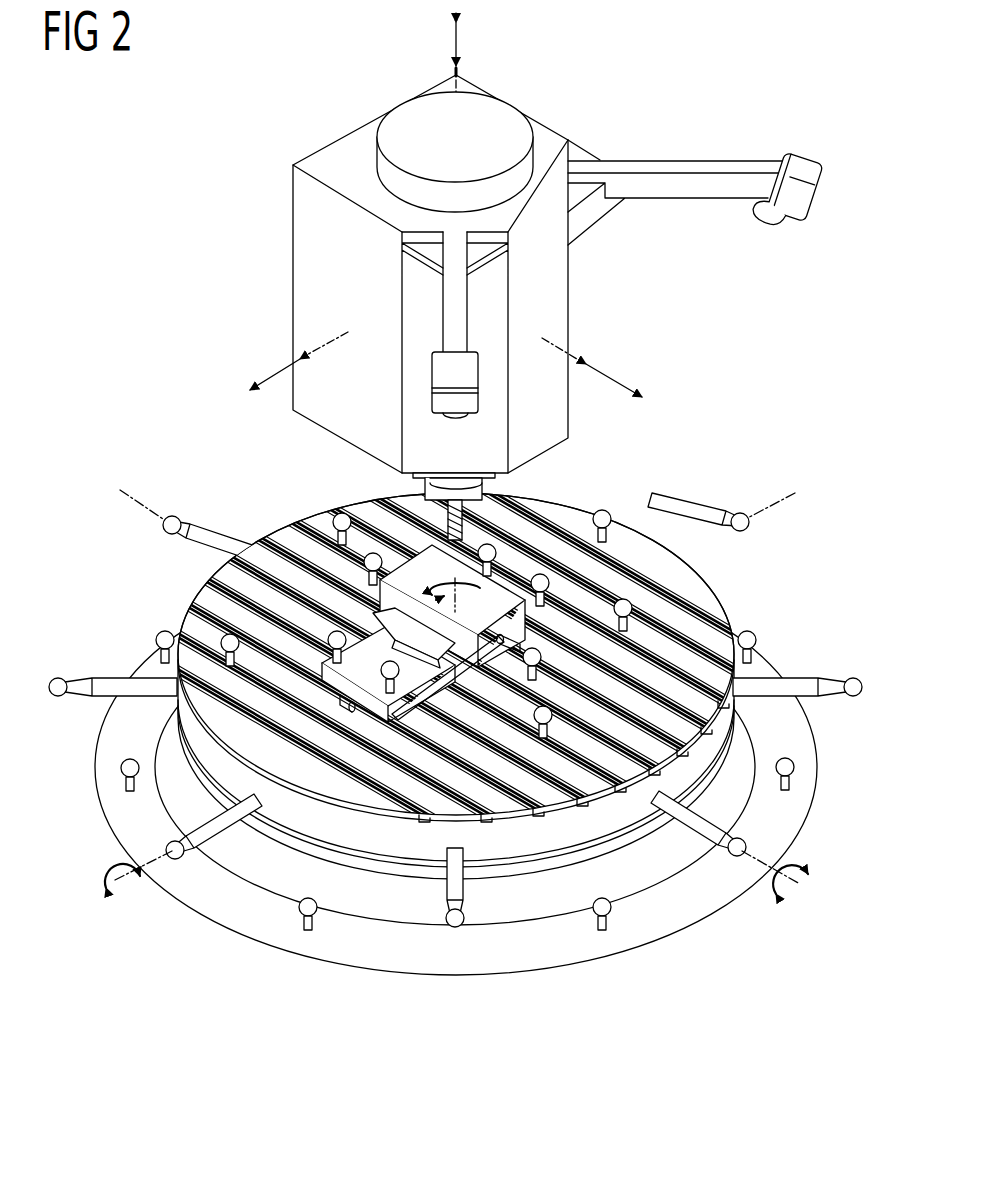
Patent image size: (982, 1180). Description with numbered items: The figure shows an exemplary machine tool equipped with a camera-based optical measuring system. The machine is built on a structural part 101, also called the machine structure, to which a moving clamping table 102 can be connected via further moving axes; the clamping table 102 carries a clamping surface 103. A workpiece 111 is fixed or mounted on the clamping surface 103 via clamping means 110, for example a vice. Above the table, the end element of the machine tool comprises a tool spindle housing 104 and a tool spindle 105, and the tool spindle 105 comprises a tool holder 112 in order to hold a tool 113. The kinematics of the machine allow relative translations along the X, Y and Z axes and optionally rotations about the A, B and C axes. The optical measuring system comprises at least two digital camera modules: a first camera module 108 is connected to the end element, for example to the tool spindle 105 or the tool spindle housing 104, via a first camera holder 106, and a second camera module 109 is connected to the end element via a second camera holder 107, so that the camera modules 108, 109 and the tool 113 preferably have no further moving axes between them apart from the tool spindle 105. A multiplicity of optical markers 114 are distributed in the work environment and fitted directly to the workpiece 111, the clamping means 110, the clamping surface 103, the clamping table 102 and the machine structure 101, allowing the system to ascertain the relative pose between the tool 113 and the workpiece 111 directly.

The structural part 101 is at (200, 913).
The clamping table 102 is at (723, 725).
The clamping surface 103 is at (725, 632).
The tool spindle housing 104 is at (568, 408).
The tool spindle 105 is at (533, 130).
The first camera holder 106 is at (443, 293).
The second camera holder 107 is at (693, 160).
The first camera module 108 is at (443, 400).
The second camera module 109 is at (805, 150).
The clamping means 110 is at (372, 618).
The workpiece 111 is at (380, 583).
The tool holder 112 is at (391, 485).
The tool 113 is at (430, 490).
The optical markers 114 is at (367, 557).